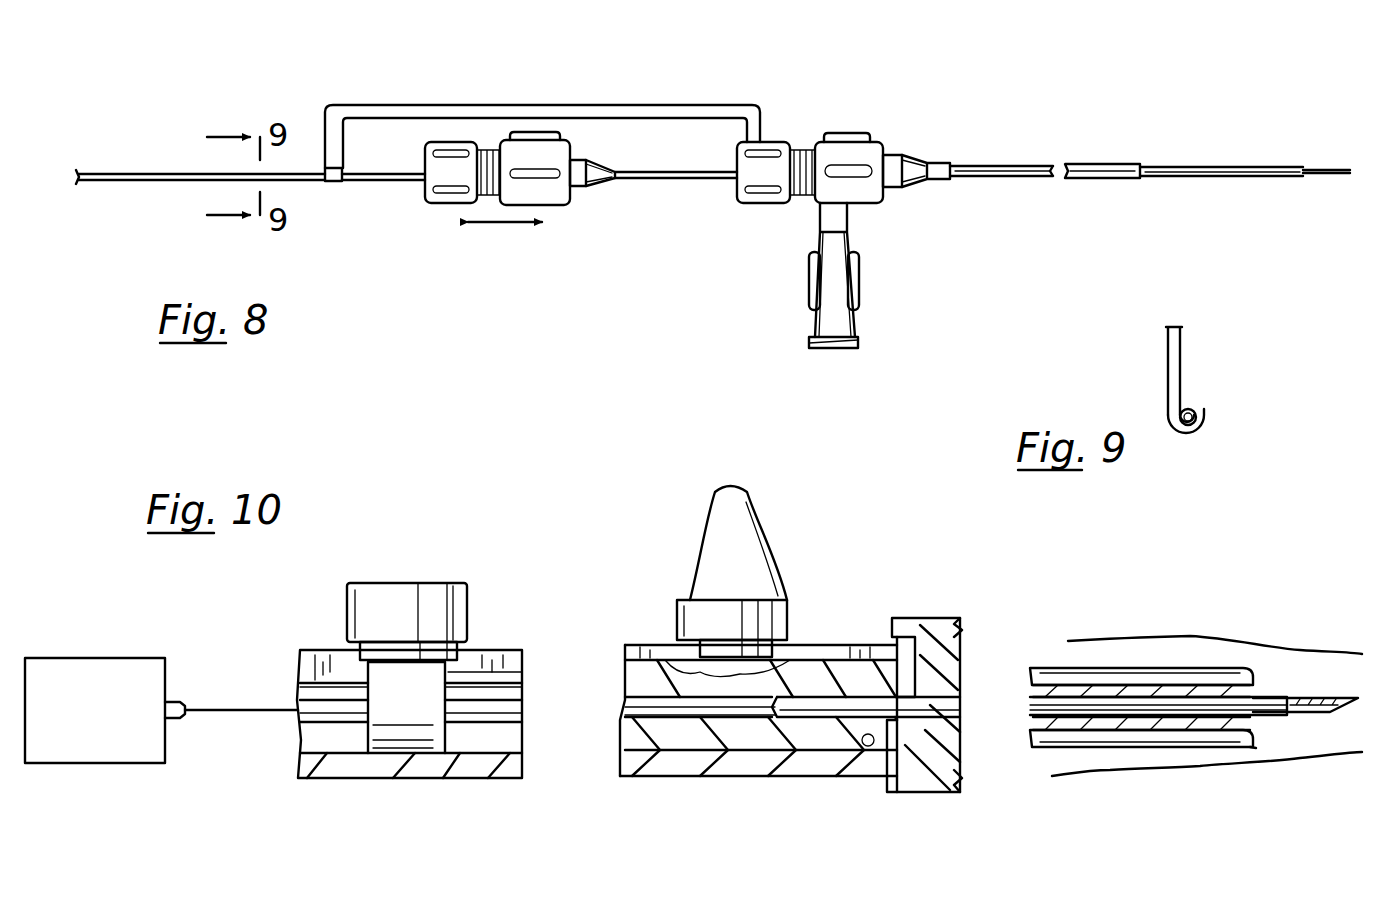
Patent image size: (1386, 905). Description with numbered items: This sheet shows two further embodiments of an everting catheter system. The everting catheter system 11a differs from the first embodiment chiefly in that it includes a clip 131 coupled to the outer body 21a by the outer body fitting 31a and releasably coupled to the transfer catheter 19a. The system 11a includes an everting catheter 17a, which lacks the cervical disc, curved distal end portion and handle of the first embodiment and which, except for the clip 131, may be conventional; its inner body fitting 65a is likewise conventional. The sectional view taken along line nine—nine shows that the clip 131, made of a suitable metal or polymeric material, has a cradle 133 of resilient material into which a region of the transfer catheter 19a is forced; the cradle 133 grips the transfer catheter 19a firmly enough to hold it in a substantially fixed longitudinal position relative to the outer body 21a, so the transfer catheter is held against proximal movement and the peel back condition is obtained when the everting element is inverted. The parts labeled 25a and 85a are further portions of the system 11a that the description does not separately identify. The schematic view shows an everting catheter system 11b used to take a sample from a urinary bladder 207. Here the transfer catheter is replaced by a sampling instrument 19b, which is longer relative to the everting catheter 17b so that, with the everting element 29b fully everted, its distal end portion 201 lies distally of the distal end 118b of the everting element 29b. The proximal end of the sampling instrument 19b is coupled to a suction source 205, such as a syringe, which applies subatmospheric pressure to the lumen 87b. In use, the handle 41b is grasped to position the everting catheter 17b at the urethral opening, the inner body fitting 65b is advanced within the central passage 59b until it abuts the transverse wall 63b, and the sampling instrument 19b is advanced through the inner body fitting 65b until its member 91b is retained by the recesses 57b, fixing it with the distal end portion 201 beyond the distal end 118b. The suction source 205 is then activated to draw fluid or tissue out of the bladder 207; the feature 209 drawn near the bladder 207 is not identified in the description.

In FIG. 8, the everting catheter system 11a is at (706, 78).
In FIG. 8, the clip 131 is at (525, 104).
In FIG. 9, the clip 131 is at (1181, 352).
In FIG. 8, the cradle 133 is at (334, 181).
In FIG. 9, the cradle 133 is at (1203, 428).
In FIG. 8, the transfer catheter 19a is at (172, 172).
In FIG. 9, the transfer catheter 19a is at (1197, 412).
In FIG. 8, the inner body fitting 65a is at (574, 206).
In FIG. 8, the tube section 25a is at (704, 181).
In FIG. 8, the outer body fitting 31a is at (805, 136).
In FIG. 8, the everting catheter 17a is at (953, 158).
In FIG. 8, the outer body 21a is at (1043, 168).
In FIG. 8, the distal wire tip 85a is at (1349, 174).
In FIG. 10, the recesses 57b is at (360, 668).
In FIG. 10, the sampling instrument 19b is at (498, 705).
In FIG. 10, the suction source 205 is at (143, 765).
In FIG. 10, the member 91b is at (380, 732).
In FIG. 10, the inner body fitting 65b is at (655, 680).
In FIG. 10, the transverse wall 63b is at (888, 652).
In FIG. 10, the handle 41b is at (720, 782).
In FIG. 10, the central passage 59b is at (868, 747).
In FIG. 10, the everting catheter 17b is at (1032, 658).
In FIG. 10, the everting catheter system 11b is at (1062, 658).
In FIG. 10, the everting element 29b is at (1115, 668).
In FIG. 10, the distal end portion 201 is at (1318, 690).
In FIG. 10, the vessel wall 209 is at (1096, 768).
In FIG. 10, the distal end 118b is at (1262, 748).
In FIG. 10, the lumen 87b is at (1296, 713).
In FIG. 10, the urinary bladder 207 is at (1340, 735).